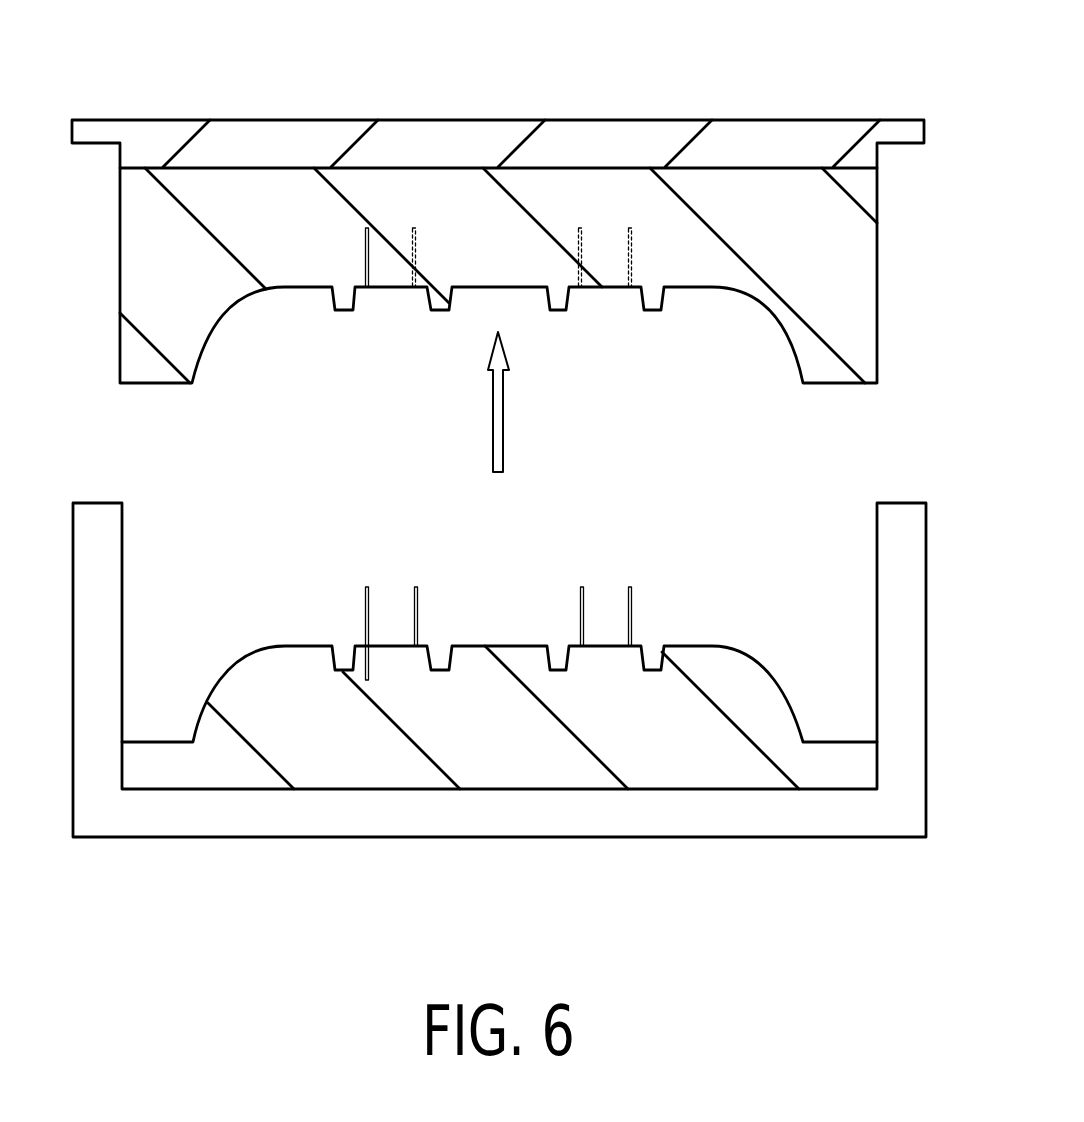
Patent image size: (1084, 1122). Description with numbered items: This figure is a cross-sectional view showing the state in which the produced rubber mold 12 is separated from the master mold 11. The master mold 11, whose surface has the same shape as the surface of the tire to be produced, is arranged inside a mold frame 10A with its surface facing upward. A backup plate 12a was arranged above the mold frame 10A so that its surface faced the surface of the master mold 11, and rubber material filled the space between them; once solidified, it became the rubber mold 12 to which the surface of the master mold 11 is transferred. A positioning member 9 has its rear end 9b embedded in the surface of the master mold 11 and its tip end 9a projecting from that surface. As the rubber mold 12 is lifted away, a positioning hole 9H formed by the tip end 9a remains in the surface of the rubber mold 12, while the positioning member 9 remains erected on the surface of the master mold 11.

The rubber mold 12 is at (693, 323).
The backup plate 12a is at (786, 130).
The positioning hole 9H is at (640, 258).
The mold frame 10A is at (293, 818).
The master mold 11 is at (507, 825).
The positioning member 9 is at (343, 613).
The tip end 9a is at (368, 607).
The rear end 9b is at (368, 675).